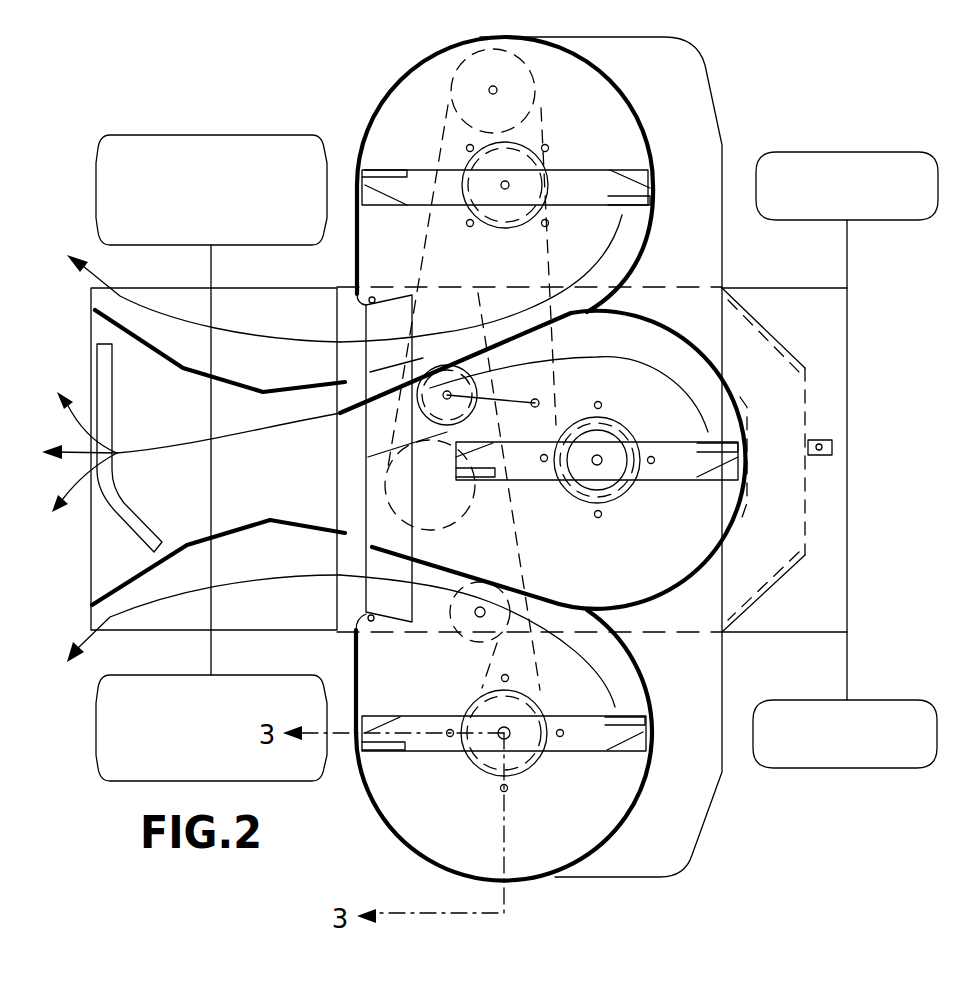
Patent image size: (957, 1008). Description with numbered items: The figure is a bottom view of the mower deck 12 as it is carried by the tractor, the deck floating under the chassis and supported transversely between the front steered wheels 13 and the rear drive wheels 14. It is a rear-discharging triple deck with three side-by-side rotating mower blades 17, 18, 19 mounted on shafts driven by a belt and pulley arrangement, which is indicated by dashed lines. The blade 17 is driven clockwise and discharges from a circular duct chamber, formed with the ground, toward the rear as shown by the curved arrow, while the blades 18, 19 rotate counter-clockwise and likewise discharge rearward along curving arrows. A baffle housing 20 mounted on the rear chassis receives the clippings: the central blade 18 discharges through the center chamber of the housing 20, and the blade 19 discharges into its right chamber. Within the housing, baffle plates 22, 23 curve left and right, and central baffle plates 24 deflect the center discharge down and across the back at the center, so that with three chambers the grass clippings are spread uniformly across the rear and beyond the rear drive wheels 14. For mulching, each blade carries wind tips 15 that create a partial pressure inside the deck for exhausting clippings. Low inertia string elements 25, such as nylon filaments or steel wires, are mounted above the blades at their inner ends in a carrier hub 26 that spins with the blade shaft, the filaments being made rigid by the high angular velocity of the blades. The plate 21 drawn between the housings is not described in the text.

The mower deck 12 is at (723, 835).
The front steered wheels 13 is at (820, 203).
The rear drive wheels 14 is at (192, 205).
The wind tips 15 is at (372, 207).
The mower blade 17 is at (588, 180).
The central mower blade 18 is at (665, 460).
The mower blade 19 is at (575, 740).
The baffle housing 20 is at (139, 419).
The mounting plate 21 is at (429, 267).
The baffle plate 22 is at (278, 390).
The baffle plate 23 is at (290, 520).
The central baffle plates 24 is at (133, 517).
The low inertia string elements 25 is at (450, 95).
The carrier hub 26 is at (500, 228).